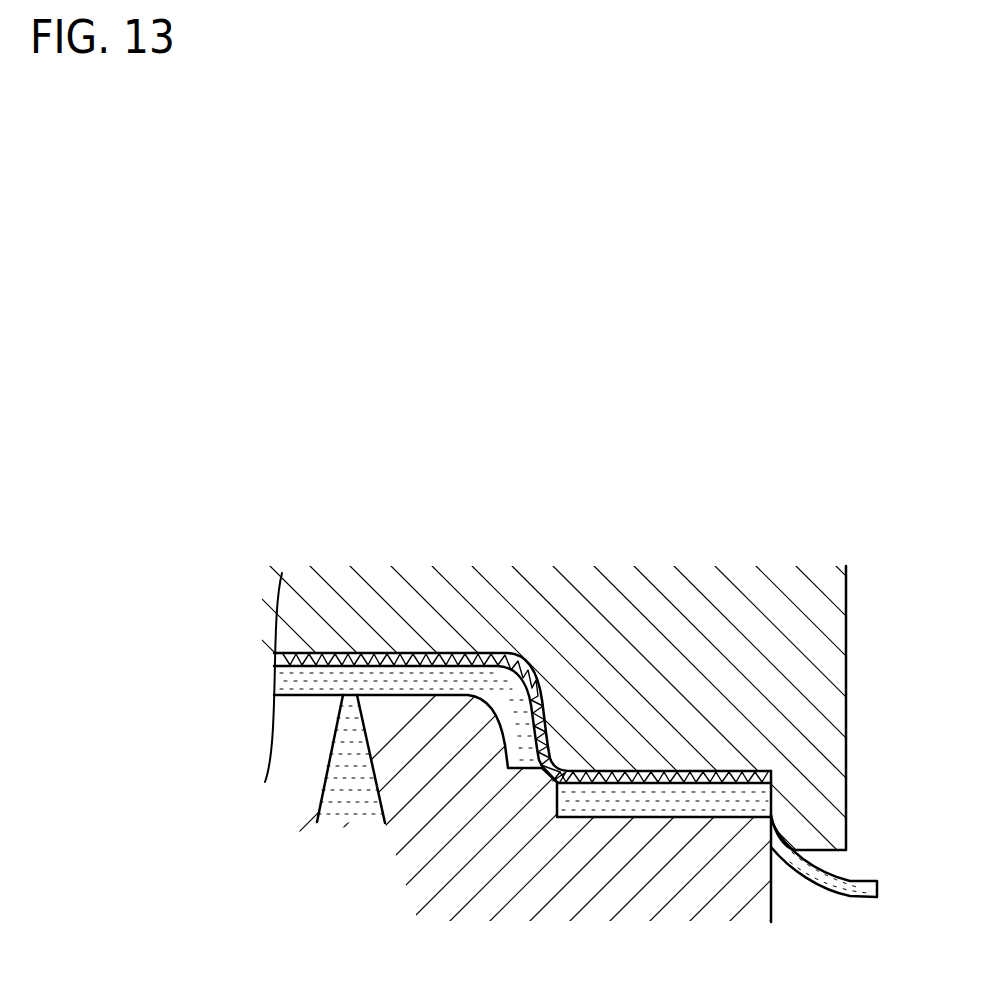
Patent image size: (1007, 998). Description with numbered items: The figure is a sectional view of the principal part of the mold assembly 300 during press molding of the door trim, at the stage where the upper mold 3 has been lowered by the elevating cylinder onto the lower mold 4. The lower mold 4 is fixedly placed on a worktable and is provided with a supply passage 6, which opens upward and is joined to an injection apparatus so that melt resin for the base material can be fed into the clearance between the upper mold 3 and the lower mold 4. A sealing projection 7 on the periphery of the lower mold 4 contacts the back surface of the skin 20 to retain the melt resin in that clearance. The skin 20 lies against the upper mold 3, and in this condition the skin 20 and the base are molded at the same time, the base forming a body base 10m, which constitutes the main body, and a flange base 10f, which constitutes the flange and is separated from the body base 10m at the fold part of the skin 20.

The mold assembly 300 is at (197, 498).
The upper mold 3 is at (650, 682).
The lower mold 4 is at (641, 869).
The skin 20 is at (310, 652).
The body base 10m is at (292, 678).
The flange base 10f is at (752, 806).
The supply passage 6 is at (333, 805).
The sealing projection 7 is at (557, 780).